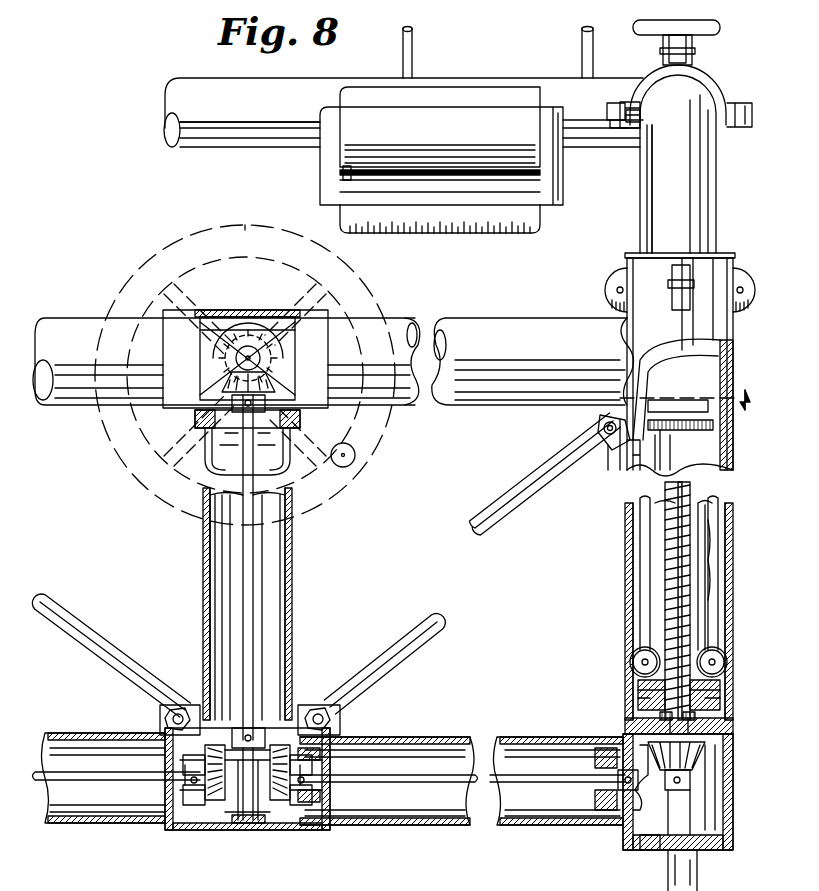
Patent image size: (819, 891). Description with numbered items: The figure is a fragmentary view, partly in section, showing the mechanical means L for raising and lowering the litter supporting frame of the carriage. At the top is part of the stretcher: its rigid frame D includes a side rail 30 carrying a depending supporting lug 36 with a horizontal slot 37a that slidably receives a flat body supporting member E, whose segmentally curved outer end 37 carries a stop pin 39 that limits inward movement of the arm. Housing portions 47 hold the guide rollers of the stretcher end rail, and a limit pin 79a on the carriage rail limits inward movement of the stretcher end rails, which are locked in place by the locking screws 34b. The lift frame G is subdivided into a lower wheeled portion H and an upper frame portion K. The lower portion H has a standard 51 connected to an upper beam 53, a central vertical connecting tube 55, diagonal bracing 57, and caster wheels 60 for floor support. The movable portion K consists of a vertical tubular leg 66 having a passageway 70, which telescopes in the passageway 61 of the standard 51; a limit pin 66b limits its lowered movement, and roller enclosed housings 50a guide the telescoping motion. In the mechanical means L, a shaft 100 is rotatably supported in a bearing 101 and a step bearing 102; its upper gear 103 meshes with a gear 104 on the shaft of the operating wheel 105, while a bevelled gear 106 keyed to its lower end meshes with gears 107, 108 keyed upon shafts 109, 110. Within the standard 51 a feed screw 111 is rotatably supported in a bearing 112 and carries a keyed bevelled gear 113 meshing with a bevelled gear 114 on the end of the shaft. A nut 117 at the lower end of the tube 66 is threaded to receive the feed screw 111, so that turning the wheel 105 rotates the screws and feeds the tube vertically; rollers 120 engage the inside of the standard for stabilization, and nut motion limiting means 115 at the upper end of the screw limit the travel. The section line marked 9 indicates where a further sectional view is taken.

The side rail 30 is at (180, 142).
The rigid frame D is at (275, 120).
The body supporting members E is at (372, 125).
The supporting lugs 36 is at (362, 194).
The outer ends of arms 37 is at (450, 97).
The slots 37a is at (510, 205).
The stop pins 39 is at (440, 176).
The housing portions 47 is at (608, 106).
The limit pins 79a is at (634, 122).
The vertical leg portions 66 is at (705, 222).
The limit pins 66b is at (632, 255).
The locking screws 34b is at (715, 32).
The upper frame portion K is at (665, 195).
The roller enclosed housings 50a is at (610, 292).
The nut motion limiting means 115 is at (733, 385).
The section line 9- 9 is at (680, 405).
The upper beam 53 is at (465, 405).
The lower wheeled portion H is at (465, 327).
The operating wheel 105 is at (366, 268).
The mechanical means L is at (140, 470).
The gear 104 is at (250, 312).
The gear 103 is at (290, 372).
The bearing 101 is at (280, 436).
The shaft 100 is at (248, 525).
The central vertical connecting tube 55 is at (295, 620).
The frame G is at (303, 559).
The diagonal bracing 57 is at (125, 665).
The shaft 109 is at (100, 776).
The step bearing 102 is at (255, 828).
The gear 107 is at (210, 830).
The gear 108 is at (282, 828).
The bevelled gear 106 is at (268, 745).
The shaft 110 is at (382, 780).
The standard 51 is at (735, 630).
The passageways 61 is at (720, 556).
The passageways 70 is at (722, 608).
The feed screw 111 is at (668, 545).
The rollers 120 is at (640, 668).
The nut 117 is at (722, 690).
The bearing 112 is at (718, 726).
The bevelled gear 113 is at (705, 762).
The bevelled gear 114 is at (655, 845).
The caster wheels 60 is at (690, 875).